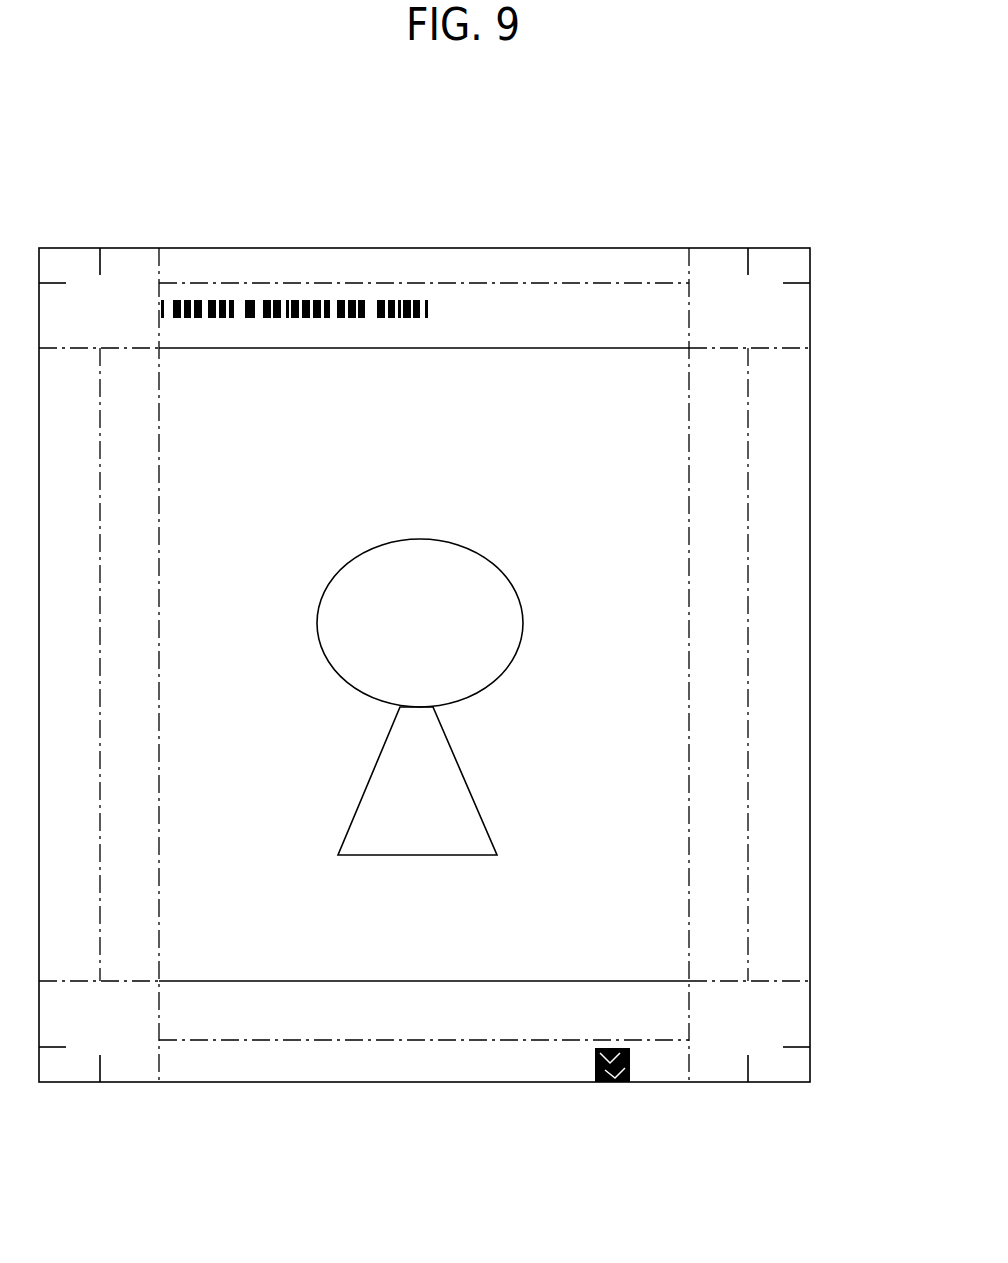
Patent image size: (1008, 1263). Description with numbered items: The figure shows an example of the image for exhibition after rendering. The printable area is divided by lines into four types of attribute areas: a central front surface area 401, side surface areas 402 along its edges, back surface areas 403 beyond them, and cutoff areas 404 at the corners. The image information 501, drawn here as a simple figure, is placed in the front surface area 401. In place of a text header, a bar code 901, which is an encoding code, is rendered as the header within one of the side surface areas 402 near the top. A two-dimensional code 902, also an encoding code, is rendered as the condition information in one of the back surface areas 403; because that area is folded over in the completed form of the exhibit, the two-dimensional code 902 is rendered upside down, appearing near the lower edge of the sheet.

The front surface area 401 is at (638, 382).
The side surface areas 402 is at (545, 334).
The back surface areas 403 is at (203, 258).
The cutoff areas 404 is at (125, 258).
The image information 501 is at (468, 545).
The bar code 901 is at (318, 300).
The two-dimensional code 902 is at (630, 1065).